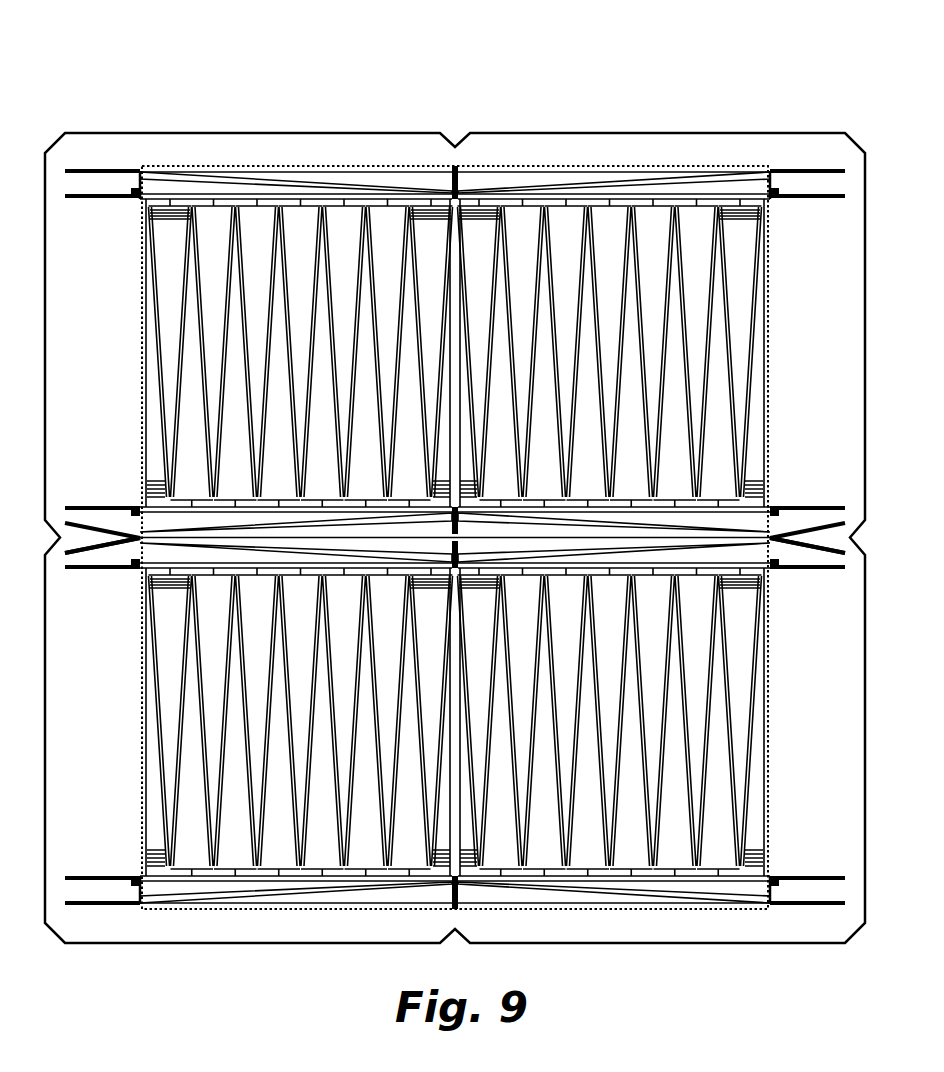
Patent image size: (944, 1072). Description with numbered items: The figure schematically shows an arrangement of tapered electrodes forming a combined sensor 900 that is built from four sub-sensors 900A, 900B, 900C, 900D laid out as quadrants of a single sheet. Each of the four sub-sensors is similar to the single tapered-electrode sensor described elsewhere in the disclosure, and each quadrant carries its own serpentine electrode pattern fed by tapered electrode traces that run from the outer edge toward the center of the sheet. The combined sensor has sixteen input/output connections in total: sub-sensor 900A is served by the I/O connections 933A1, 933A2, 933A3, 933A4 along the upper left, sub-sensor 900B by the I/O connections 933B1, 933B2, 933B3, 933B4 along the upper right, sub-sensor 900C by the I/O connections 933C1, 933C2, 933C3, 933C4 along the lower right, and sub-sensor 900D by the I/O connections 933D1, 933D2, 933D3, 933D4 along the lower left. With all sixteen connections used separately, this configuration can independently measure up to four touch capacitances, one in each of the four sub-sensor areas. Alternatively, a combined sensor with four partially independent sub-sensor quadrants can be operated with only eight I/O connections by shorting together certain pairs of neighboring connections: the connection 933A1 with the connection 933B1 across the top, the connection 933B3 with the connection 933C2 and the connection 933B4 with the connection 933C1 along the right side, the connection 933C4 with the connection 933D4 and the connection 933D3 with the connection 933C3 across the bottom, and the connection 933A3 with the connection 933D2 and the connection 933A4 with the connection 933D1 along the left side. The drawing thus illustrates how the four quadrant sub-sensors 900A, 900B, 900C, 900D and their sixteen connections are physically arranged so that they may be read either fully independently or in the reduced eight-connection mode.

The combined sensor 900 is at (340, 101).
The sub-sensor 900A is at (299, 316).
The sub-sensor 900B is at (611, 316).
The sub-sensor 900C is at (611, 762).
The sub-sensor 900D is at (299, 762).
The I/O connection 933A1 is at (87, 171).
The I/O connection 933A2 is at (101, 198).
The I/O connection 933A3 is at (100, 507).
The I/O connection 933A4 is at (65, 523).
The I/O connection 933B1 is at (833, 171).
The I/O connection 933B2 is at (818, 198).
The I/O connection 933B3 is at (819, 507).
The I/O connection 933B4 is at (845, 523).
The I/O connection 933C1 is at (845, 553).
The I/O connection 933C2 is at (819, 568).
The I/O connection 933C3 is at (800, 878).
The I/O connection 933C4 is at (813, 904).
The I/O connection 933D1 is at (65, 553).
The I/O connection 933D2 is at (101, 568).
The I/O connection 933D3 is at (93, 878).
The I/O connection 933D4 is at (78, 904).